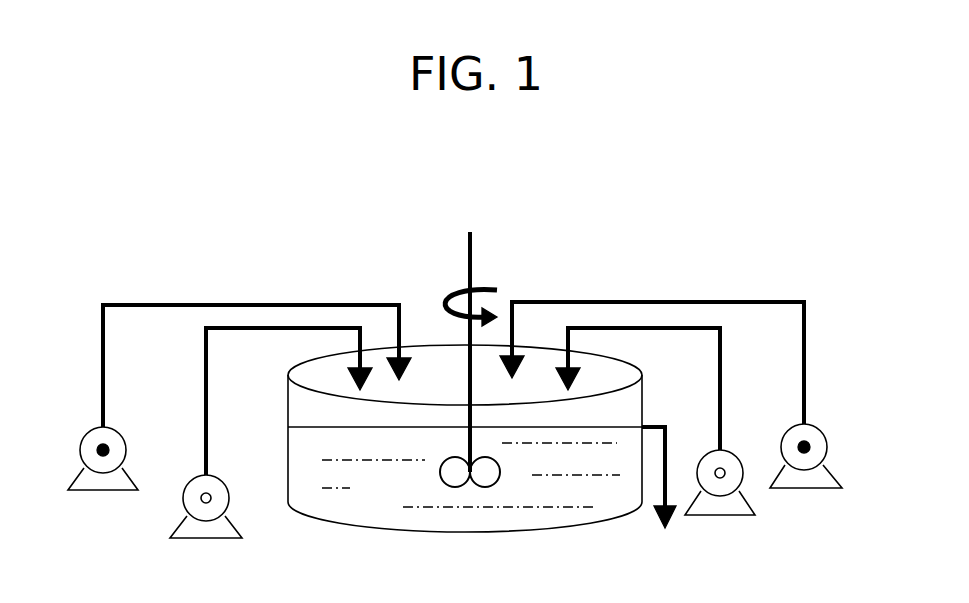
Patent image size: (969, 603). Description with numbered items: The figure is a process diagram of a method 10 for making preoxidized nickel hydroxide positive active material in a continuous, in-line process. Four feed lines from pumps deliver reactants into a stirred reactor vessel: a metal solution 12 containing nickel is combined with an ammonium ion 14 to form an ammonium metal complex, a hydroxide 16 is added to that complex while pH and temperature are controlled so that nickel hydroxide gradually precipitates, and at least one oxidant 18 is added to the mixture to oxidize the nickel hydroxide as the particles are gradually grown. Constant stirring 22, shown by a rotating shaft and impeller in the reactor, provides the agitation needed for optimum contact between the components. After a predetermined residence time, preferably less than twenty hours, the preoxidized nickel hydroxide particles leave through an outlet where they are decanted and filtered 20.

The method for making preoxidized nickel hydroxide material 10 is at (335, 226).
The metal solution 12 is at (92, 373).
The ammonium ion 14 is at (196, 400).
The hydroxide 16 is at (734, 388).
The oxidant 18 is at (818, 358).
The decanting and filtering 20 is at (652, 492).
The constant stirring 22 is at (485, 251).